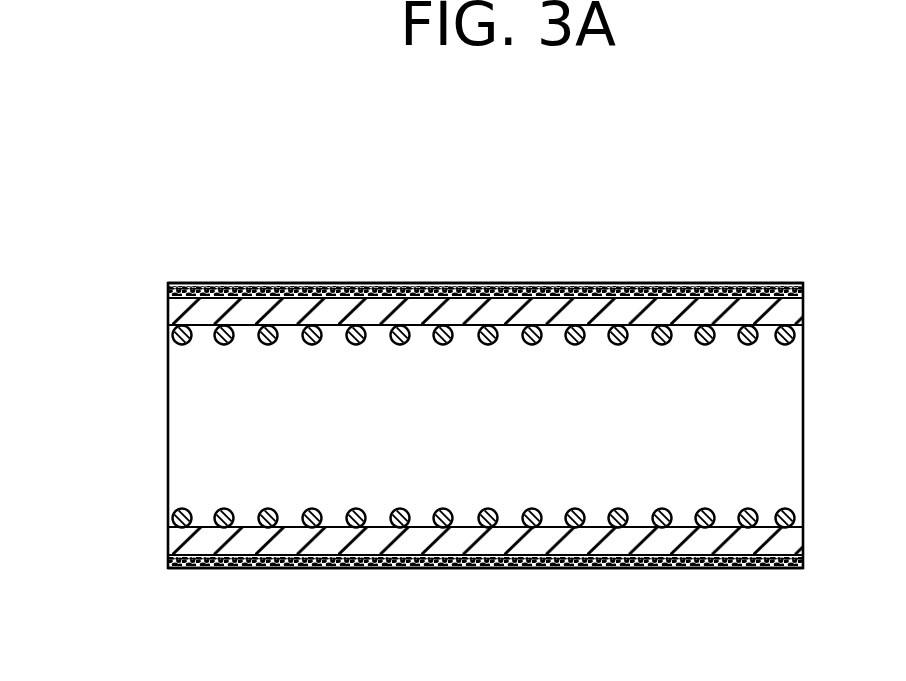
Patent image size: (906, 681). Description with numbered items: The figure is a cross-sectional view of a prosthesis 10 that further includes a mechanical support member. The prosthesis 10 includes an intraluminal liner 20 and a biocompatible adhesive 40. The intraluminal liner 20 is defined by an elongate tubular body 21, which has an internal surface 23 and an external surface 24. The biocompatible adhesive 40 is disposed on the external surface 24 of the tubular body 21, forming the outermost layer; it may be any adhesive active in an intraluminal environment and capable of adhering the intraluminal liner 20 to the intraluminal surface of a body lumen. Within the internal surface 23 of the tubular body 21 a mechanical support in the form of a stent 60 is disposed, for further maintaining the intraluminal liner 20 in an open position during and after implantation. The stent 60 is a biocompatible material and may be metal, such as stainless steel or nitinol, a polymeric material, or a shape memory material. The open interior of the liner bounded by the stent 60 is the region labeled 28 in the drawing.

The prosthesis 10 is at (300, 165).
The biocompatible adhesive 40 is at (310, 283).
The elongate tubular body 21 is at (380, 290).
The intraluminal liner 20 is at (469, 299).
The external surface 24 is at (522, 299).
The internal surface 23 is at (556, 338).
The stent 60 is at (746, 325).
The lumen 28 is at (202, 427).